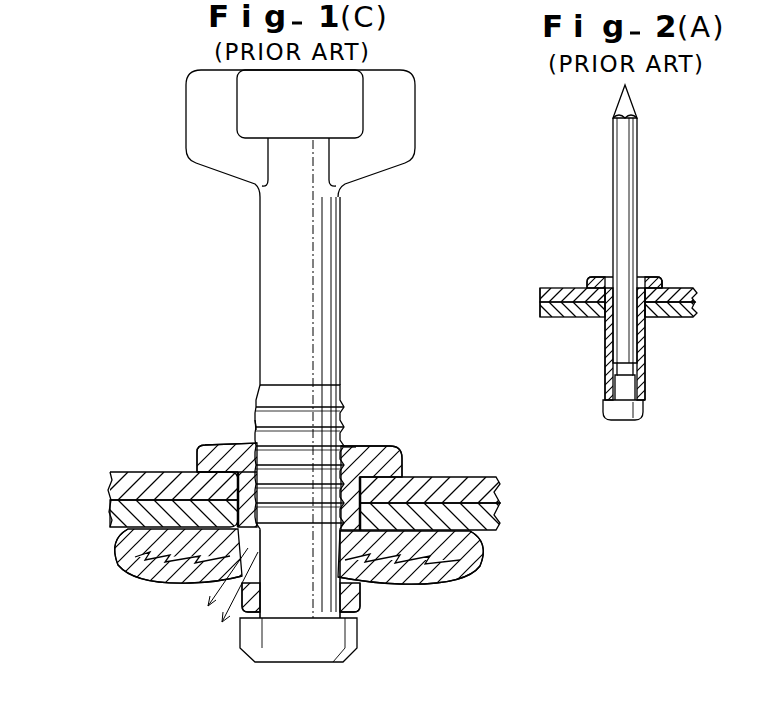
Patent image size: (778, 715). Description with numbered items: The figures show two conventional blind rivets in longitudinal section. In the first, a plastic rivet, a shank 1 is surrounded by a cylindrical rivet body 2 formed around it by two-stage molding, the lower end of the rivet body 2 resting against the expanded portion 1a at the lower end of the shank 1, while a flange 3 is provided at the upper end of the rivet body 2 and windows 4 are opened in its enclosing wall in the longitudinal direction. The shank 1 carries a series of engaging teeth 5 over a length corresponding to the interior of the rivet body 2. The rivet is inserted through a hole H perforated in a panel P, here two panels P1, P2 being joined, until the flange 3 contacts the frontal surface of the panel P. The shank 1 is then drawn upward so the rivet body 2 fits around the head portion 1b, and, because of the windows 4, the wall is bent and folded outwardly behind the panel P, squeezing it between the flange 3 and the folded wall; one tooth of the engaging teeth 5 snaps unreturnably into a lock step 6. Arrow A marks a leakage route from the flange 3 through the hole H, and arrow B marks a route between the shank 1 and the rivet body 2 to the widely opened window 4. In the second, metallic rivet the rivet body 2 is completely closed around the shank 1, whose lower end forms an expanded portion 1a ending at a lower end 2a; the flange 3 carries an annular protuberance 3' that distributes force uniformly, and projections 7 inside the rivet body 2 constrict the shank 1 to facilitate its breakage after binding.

In FIG. 1C, the shank 1 is at (336, 366).
In FIG. 2A, the shank 1 is at (634, 275).
In FIG. 1C, the expanded portion 1a is at (347, 638).
In FIG. 2A, the expanded portion 1a is at (622, 410).
In FIG. 1C, the head portion 1b is at (398, 103).
In FIG. 1C, the rivet body 2 is at (468, 565).
In FIG. 2A, the rivet body 2 is at (606, 337).
In FIG. 2A, the end of sleeve 2a is at (645, 405).
In FIG. 1C, the flange 3 is at (310, 500).
In FIG. 2A, the flange 3 is at (625, 249).
In FIG. 2A, the annular protuberance 3' is at (683, 260).
In FIG. 1C, the windows 4 is at (307, 572).
In FIG. 1C, the engaging teeth 5 is at (297, 425).
In FIG. 1C, the lock step 6 is at (353, 450).
In FIG. 2A, the projections 7 is at (636, 366).
In FIG. 1C, the arrow A is at (184, 465).
In FIG. 1C, the arrow B is at (251, 414).
In FIG. 1C, the hole H is at (217, 472).
In FIG. 2A, the hole H is at (648, 320).
In FIG. 1C, the panel P is at (563, 478).
In FIG. 2A, the panel P is at (495, 266).
In FIG. 1C, the panel P1 is at (498, 490).
In FIG. 2A, the panel P1 is at (545, 294).
In FIG. 1C, the panel P2 is at (498, 520).
In FIG. 2A, the panel P2 is at (543, 311).